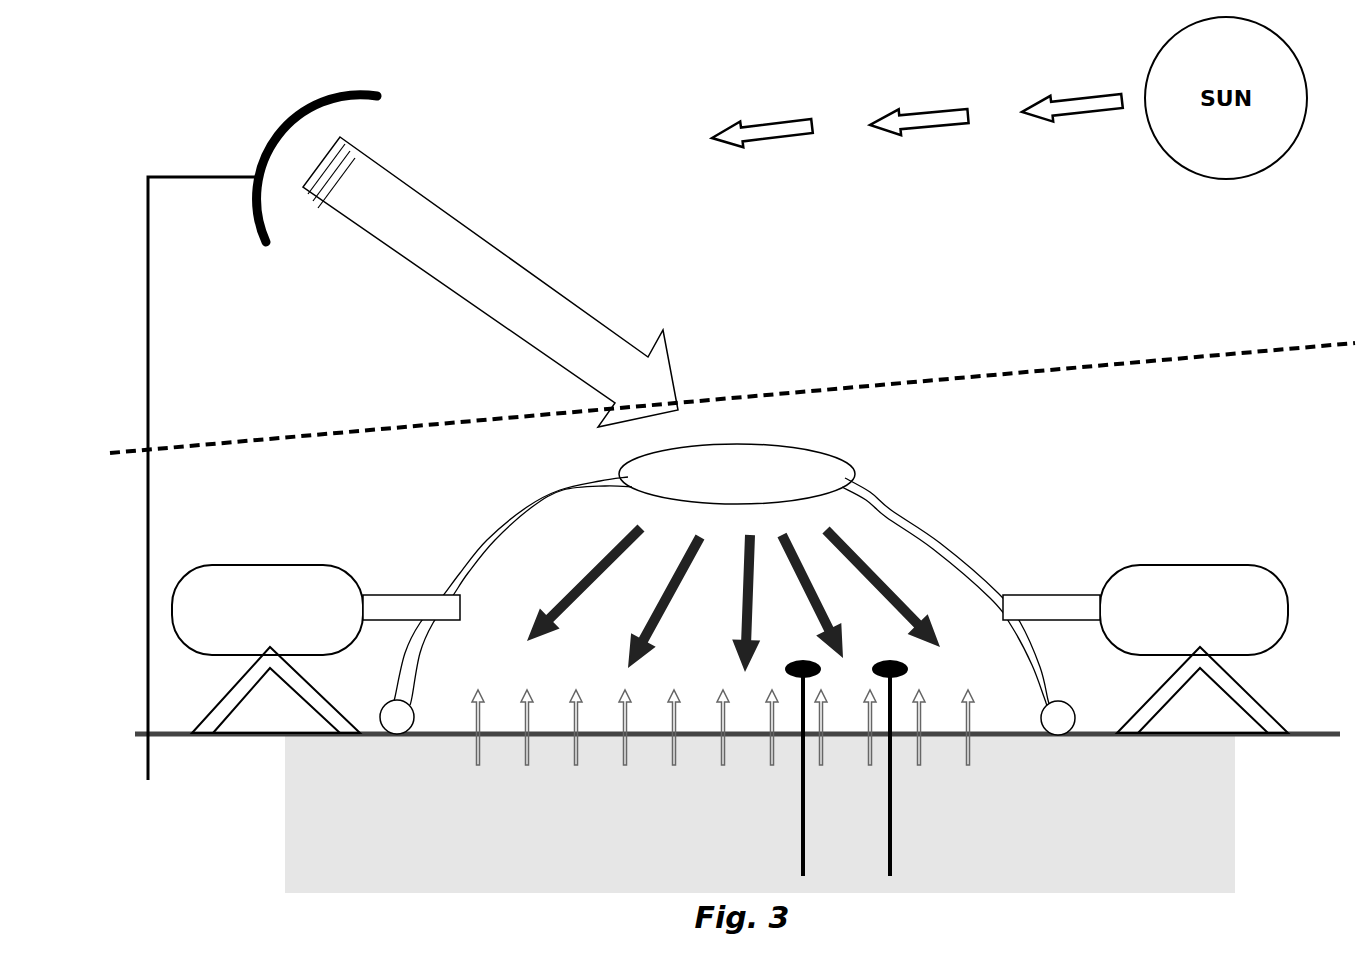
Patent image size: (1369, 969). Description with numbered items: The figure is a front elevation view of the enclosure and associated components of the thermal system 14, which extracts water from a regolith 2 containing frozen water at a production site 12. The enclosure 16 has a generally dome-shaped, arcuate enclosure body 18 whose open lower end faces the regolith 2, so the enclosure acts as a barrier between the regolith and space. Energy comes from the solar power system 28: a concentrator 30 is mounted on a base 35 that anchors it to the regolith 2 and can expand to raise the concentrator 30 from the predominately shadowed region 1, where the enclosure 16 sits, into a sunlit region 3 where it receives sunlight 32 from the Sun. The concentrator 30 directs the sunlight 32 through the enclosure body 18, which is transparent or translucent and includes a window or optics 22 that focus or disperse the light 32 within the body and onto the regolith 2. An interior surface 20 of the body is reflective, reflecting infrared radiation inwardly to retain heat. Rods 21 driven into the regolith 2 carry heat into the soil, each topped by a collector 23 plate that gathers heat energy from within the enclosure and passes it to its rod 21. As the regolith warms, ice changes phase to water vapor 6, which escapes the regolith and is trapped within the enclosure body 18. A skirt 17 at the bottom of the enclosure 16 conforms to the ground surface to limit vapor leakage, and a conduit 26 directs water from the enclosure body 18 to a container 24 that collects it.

The predominately shadowed region 1 is at (732, 398).
The regolith 2 is at (737, 813).
The sunlit region 3 is at (1204, 323).
The water vapor 6 is at (530, 717).
The production site 12 is at (1044, 261).
The thermal system 14 is at (882, 291).
The enclosure 16 is at (721, 565).
The skirt 17 is at (397, 722).
The enclosure body 18 is at (887, 510).
The interior surface 20 is at (945, 543).
The rods 21 is at (803, 799).
The window or optics 22 is at (737, 474).
The collector 23 is at (803, 661).
The container 24 is at (730, 649).
The conduit 26 is at (382, 600).
The solar power system 28 is at (464, 137).
The concentrator 30 is at (290, 128).
The sunlight 32 is at (758, 78).
The base 35 is at (150, 365).